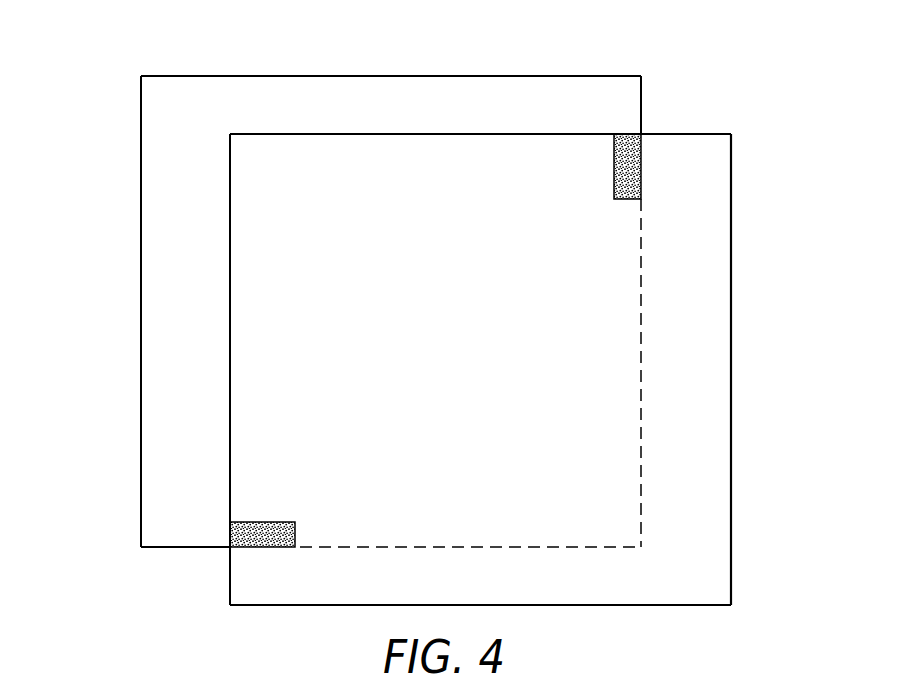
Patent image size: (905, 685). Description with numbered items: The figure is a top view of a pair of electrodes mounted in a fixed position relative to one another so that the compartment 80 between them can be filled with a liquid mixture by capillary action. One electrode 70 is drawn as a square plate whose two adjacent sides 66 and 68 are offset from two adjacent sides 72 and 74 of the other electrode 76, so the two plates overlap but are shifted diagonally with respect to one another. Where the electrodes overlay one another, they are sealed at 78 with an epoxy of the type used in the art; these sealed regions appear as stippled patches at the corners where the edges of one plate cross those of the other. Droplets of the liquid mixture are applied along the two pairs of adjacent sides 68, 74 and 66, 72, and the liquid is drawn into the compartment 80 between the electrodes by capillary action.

The adjacent side 66 is at (445, 134).
The adjacent side 68 is at (230, 398).
The electrode 70 is at (738, 255).
The adjacent side 72 is at (396, 76).
The adjacent side 74 is at (140, 320).
The electrode 76 is at (140, 188).
The seal 78 is at (612, 168).
The compartment 80 is at (583, 134).